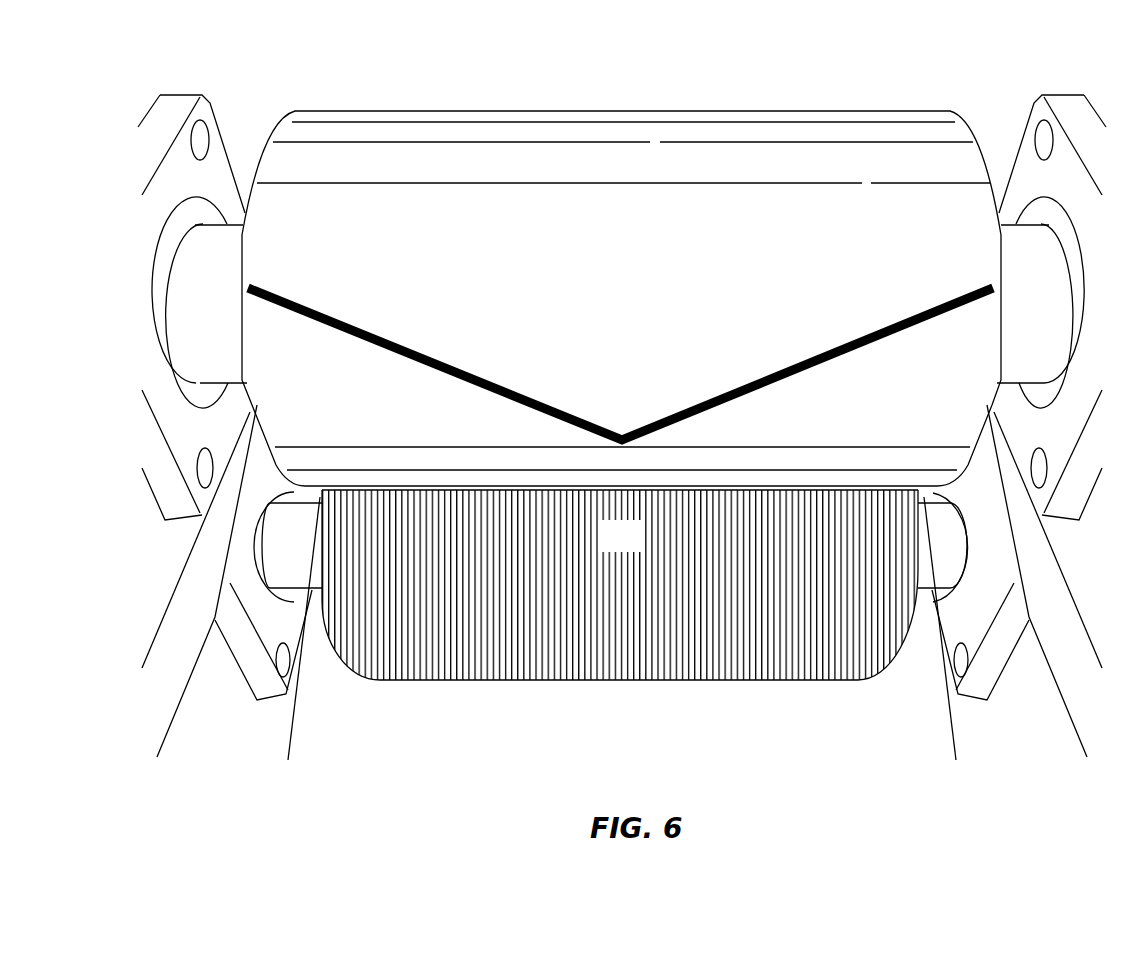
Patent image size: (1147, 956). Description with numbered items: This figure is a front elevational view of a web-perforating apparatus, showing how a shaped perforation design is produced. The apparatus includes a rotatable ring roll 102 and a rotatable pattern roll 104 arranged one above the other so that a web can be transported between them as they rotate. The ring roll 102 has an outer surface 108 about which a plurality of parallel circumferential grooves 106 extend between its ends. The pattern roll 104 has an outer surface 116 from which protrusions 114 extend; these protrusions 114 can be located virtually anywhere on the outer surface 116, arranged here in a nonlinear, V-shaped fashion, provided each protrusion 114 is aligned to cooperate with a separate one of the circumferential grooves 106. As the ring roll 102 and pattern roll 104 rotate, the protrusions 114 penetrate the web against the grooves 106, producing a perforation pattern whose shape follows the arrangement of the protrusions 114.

The ring roll 102 is at (620, 589).
The pattern roll 104 is at (621, 258).
The circumferential groove 106 is at (440, 497).
The outer surface 108 is at (640, 549).
The protrusion 114 is at (312, 308).
The outer surface 116 is at (634, 277).